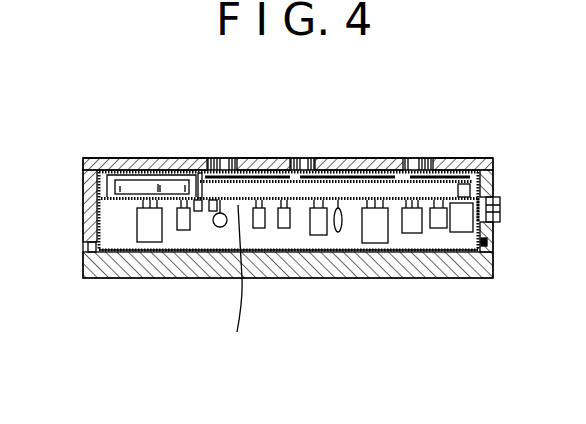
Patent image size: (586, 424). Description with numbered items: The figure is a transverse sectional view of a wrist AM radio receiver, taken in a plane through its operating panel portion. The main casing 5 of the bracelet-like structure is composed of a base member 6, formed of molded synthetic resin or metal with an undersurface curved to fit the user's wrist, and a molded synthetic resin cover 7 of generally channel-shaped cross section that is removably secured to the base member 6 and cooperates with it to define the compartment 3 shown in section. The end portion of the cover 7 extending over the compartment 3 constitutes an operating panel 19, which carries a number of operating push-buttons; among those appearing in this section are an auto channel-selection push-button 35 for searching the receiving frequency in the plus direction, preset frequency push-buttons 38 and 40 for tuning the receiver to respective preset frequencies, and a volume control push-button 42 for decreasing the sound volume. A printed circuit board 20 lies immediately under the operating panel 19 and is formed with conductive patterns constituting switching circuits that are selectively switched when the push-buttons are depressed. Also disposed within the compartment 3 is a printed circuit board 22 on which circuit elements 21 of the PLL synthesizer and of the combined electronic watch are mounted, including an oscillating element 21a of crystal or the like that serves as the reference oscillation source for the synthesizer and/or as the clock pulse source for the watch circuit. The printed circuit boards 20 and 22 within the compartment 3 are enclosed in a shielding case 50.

The compartment 3 is at (112, 224).
The main casing 5 is at (76, 152).
The base member 6 is at (493, 265).
The cover 7 is at (470, 166).
The operating panel 19 is at (110, 159).
The printed circuit board 20 is at (367, 167).
The circuit elements 21 is at (183, 230).
The oscillating element 21a is at (217, 228).
The printed circuit board 22 is at (237, 283).
The auto channel-selection push-button 35 is at (423, 158).
The preset frequency push-button 38 is at (217, 160).
The preset frequency push-button 40 is at (305, 158).
The volume control push-button 42 is at (500, 203).
The shielding case 50 is at (276, 250).